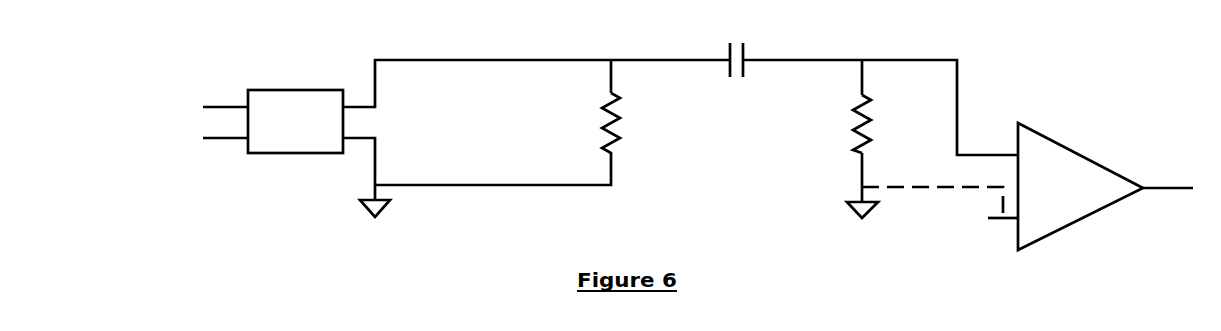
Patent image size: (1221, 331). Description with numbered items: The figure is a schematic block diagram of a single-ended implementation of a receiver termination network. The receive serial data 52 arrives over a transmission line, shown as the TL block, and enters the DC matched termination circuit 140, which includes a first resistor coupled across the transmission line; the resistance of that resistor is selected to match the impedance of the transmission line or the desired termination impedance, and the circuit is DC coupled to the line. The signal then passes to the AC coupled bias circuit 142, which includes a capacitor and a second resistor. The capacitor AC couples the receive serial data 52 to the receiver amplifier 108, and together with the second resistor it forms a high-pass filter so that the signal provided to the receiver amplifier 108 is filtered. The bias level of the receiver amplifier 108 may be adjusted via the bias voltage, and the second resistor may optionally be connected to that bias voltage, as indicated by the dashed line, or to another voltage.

The receive serial data 52 is at (211, 125).
The DC matched termination circuit 140 is at (489, 150).
The AC coupled bias circuit 142 is at (857, 157).
The receiver amplifier 108 is at (1105, 182).